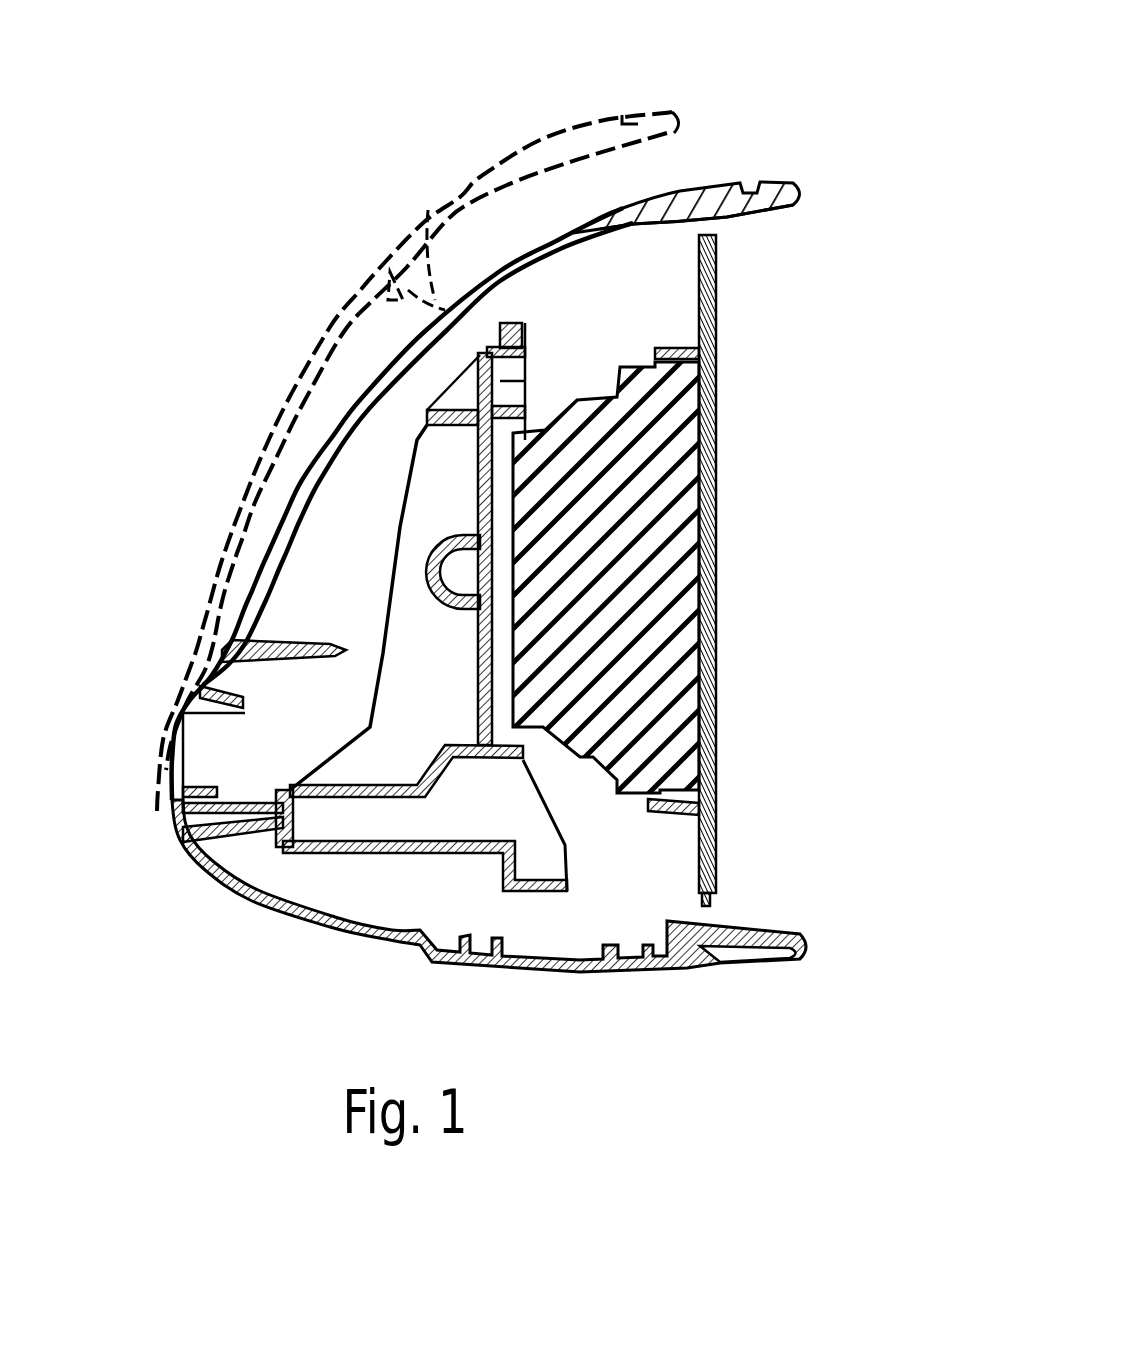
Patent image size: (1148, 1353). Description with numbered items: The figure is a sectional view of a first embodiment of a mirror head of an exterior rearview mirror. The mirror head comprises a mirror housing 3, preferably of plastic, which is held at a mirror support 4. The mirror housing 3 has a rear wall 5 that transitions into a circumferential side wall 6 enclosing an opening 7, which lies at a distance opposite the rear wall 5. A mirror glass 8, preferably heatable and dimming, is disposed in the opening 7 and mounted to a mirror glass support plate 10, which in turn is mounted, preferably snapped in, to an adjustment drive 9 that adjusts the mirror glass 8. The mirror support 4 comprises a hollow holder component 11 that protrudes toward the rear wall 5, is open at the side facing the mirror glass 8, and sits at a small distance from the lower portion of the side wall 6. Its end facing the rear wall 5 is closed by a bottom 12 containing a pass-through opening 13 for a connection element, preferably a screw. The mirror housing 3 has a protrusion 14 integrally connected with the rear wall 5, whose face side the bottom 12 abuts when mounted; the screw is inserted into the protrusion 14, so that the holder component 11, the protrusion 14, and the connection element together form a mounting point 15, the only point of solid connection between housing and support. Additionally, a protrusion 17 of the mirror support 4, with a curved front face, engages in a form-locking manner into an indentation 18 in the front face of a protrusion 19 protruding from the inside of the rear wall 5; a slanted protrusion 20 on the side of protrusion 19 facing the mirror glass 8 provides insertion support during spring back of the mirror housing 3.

The mirror housing 3 is at (687, 180).
The mirror support 4 is at (370, 857).
The rear wall 5 is at (350, 430).
The circumferential side wall 6 is at (653, 213).
The opening 7 is at (761, 538).
The mirror glass 8 is at (727, 716).
The adjustment drive 9 is at (653, 477).
The mirror glass support plate 10 is at (723, 270).
The holder component 11 is at (320, 848).
The bottom 12 is at (277, 832).
The pass-through opening 13 is at (273, 832).
The protrusion 14 is at (177, 833).
The mounting point 15 is at (320, 852).
The protrusion 17 is at (500, 318).
The indentation 18 is at (525, 325).
The protrusion 19 is at (442, 318).
The slanted protrusion 20 is at (527, 333).